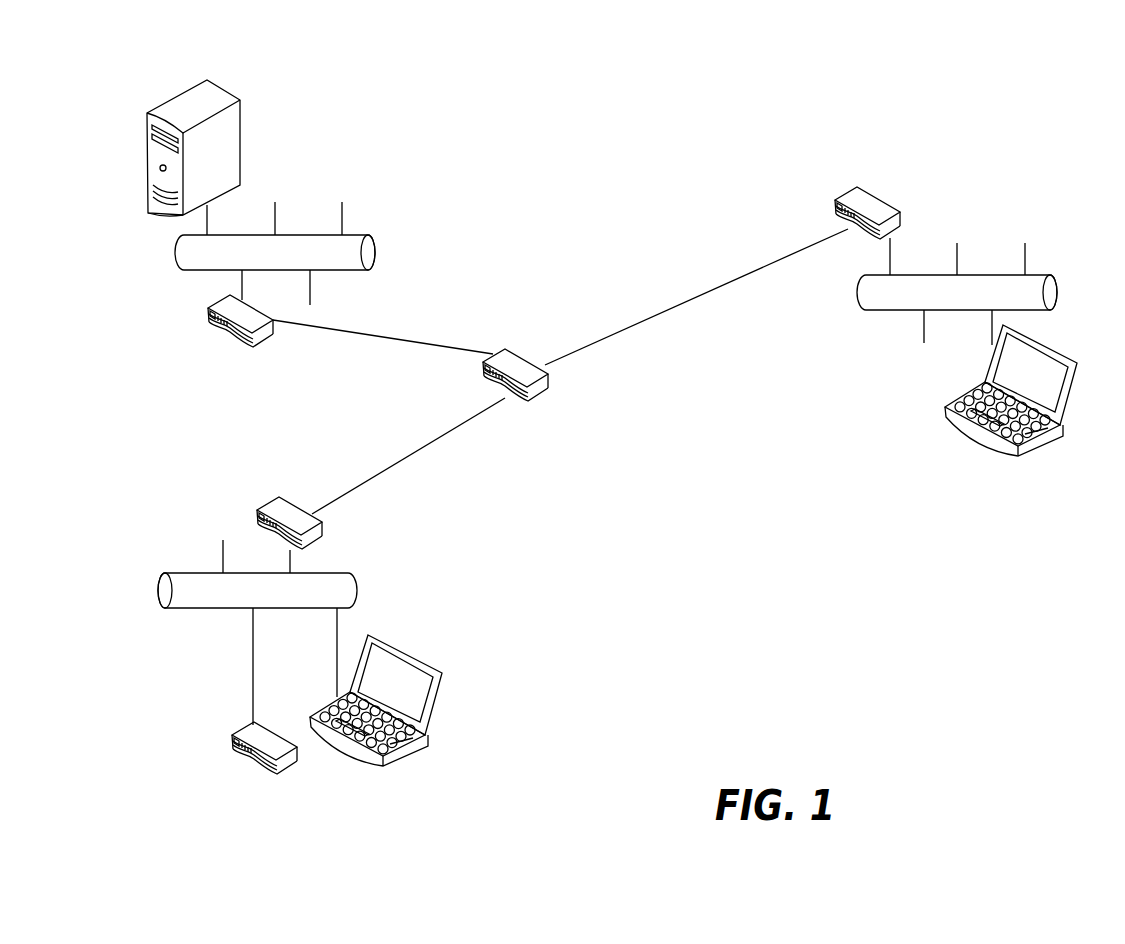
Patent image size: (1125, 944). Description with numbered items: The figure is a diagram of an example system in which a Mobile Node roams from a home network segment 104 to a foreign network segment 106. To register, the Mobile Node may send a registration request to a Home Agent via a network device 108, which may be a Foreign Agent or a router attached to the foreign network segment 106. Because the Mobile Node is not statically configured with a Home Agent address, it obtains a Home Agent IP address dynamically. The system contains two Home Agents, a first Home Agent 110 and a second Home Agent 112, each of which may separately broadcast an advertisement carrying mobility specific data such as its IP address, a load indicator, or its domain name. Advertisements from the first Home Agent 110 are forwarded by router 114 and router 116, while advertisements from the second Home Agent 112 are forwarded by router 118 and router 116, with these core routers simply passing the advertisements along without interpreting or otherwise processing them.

The home network segment 104 is at (341, 573).
The foreign network segment 106 is at (1052, 276).
The network device 108 is at (884, 199).
The Home Agent 1 110 is at (243, 150).
The Home Agent 2 112 is at (270, 727).
The router 114 is at (225, 338).
The router 116 is at (534, 350).
The router 118 is at (302, 498).